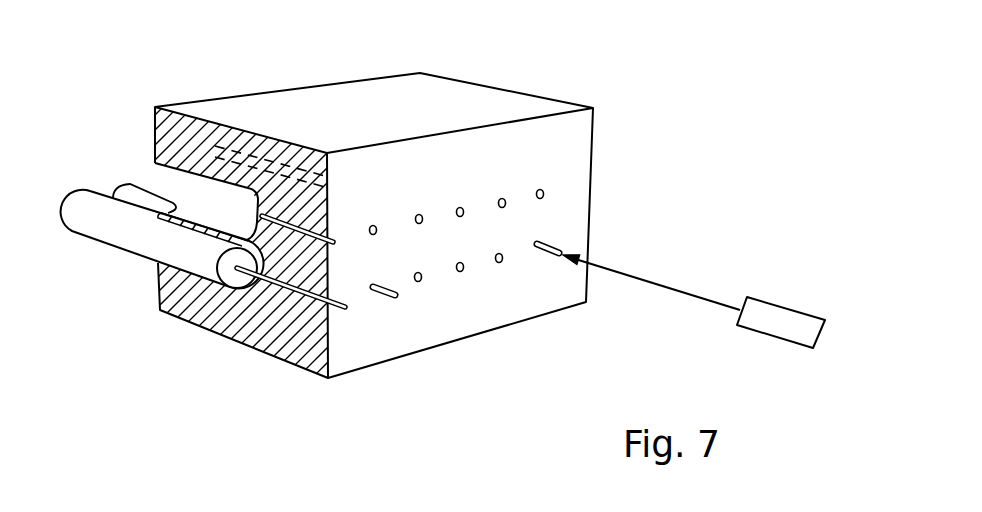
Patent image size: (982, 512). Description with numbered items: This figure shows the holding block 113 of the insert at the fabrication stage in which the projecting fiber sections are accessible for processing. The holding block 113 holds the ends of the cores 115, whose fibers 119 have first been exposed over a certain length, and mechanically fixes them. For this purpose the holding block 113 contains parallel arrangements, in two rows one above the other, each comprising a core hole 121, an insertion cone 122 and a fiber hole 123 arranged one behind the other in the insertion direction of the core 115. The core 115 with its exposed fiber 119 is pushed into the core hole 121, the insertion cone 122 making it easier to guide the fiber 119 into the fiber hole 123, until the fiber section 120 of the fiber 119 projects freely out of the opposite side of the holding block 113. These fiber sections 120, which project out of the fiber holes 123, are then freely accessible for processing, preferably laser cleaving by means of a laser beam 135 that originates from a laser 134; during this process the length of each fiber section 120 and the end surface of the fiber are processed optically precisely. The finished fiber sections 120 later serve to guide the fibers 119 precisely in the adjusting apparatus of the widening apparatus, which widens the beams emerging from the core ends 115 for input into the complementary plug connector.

The holding block 113 is at (572, 152).
The core 115 is at (115, 232).
The fiber 119 is at (295, 285).
The fiber section 120 is at (550, 252).
The core hole 121 is at (210, 200).
The insertion cone 122 is at (322, 205).
The fiber hole 123 is at (420, 215).
The laser 134 is at (780, 325).
The laser beam 135 is at (653, 288).